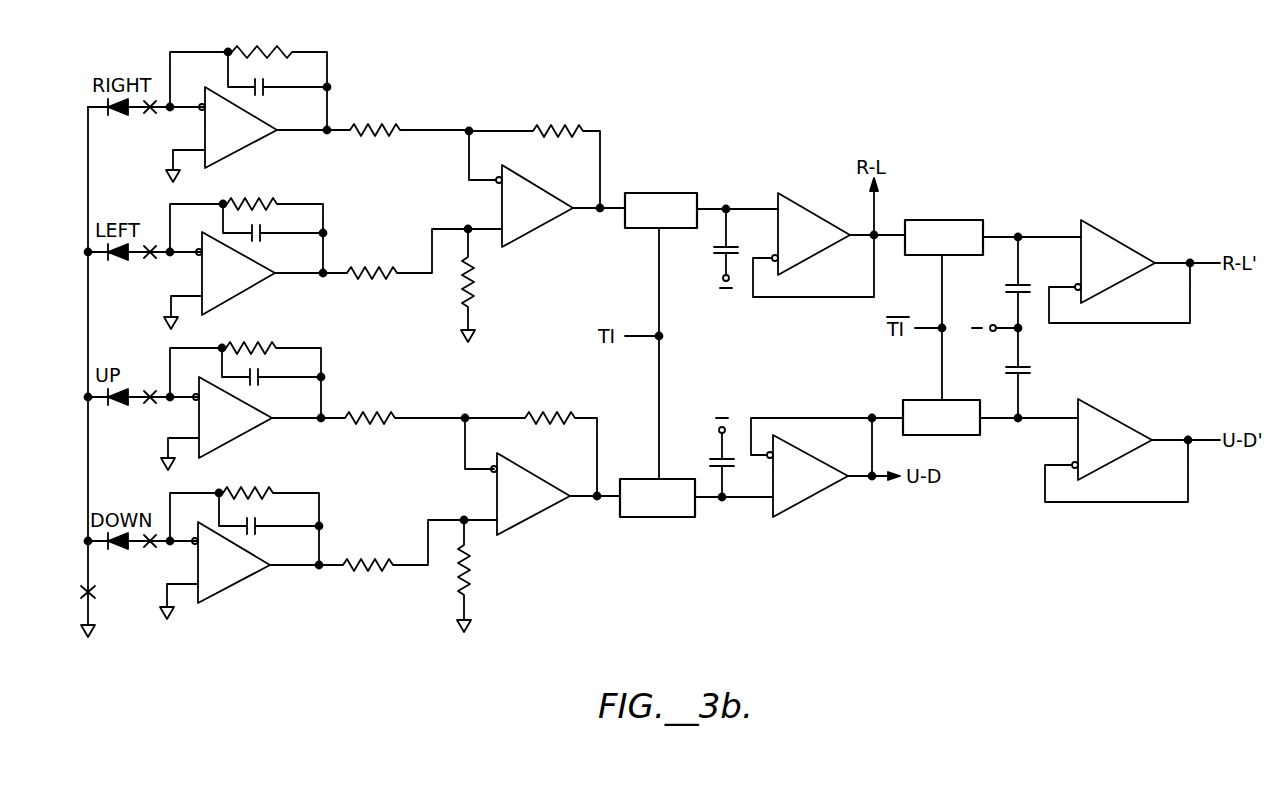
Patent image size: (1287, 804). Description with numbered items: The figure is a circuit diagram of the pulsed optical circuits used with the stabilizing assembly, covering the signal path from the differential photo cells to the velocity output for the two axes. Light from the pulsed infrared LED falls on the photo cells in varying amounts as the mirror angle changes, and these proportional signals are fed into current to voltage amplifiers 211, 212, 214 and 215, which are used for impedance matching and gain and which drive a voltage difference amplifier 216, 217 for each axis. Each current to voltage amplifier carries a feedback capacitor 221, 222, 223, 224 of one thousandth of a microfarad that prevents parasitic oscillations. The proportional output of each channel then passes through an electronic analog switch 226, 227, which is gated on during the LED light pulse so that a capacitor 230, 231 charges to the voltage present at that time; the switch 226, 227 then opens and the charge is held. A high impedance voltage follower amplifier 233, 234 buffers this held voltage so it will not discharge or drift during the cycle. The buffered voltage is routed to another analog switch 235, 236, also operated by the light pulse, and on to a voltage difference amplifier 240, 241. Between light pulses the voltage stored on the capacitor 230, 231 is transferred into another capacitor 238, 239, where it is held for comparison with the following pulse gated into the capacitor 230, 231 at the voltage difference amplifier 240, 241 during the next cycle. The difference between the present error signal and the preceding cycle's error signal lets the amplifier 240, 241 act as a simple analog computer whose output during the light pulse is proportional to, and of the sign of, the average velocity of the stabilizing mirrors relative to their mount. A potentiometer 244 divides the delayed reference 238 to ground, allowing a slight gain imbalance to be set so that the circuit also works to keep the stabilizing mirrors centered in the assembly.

The current to voltage amplifier 211 is at (232, 153).
The current to voltage amplifier 212 is at (232, 296).
The current to voltage amplifier 214 is at (228, 441).
The current to voltage amplifier 215 is at (228, 588).
The voltage difference amplifier 216 is at (528, 237).
The voltage difference amplifier 217 is at (523, 526).
The capacitor 221 is at (261, 92).
The capacitor 222 is at (258, 238).
The capacitor 223 is at (256, 382).
The capacitor 224 is at (253, 531).
The electronic analog switch 226 is at (663, 193).
The electronic analog switch 227 is at (650, 517).
The capacitor 230 is at (716, 252).
The capacitor 231 is at (712, 462).
The high impedance voltage follower amplifier 233 is at (790, 200).
The high impedance voltage follower amplifier 234 is at (790, 508).
The analog switch 235 is at (945, 220).
The analog switch 236 is at (950, 435).
The capacitor 238 is at (1004, 290).
The capacitor 239 is at (1003, 368).
The voltage difference amplifier 240 is at (1105, 236).
The voltage difference amplifier 241 is at (1105, 413).
The potentiometer 244 is at (1165, 318).